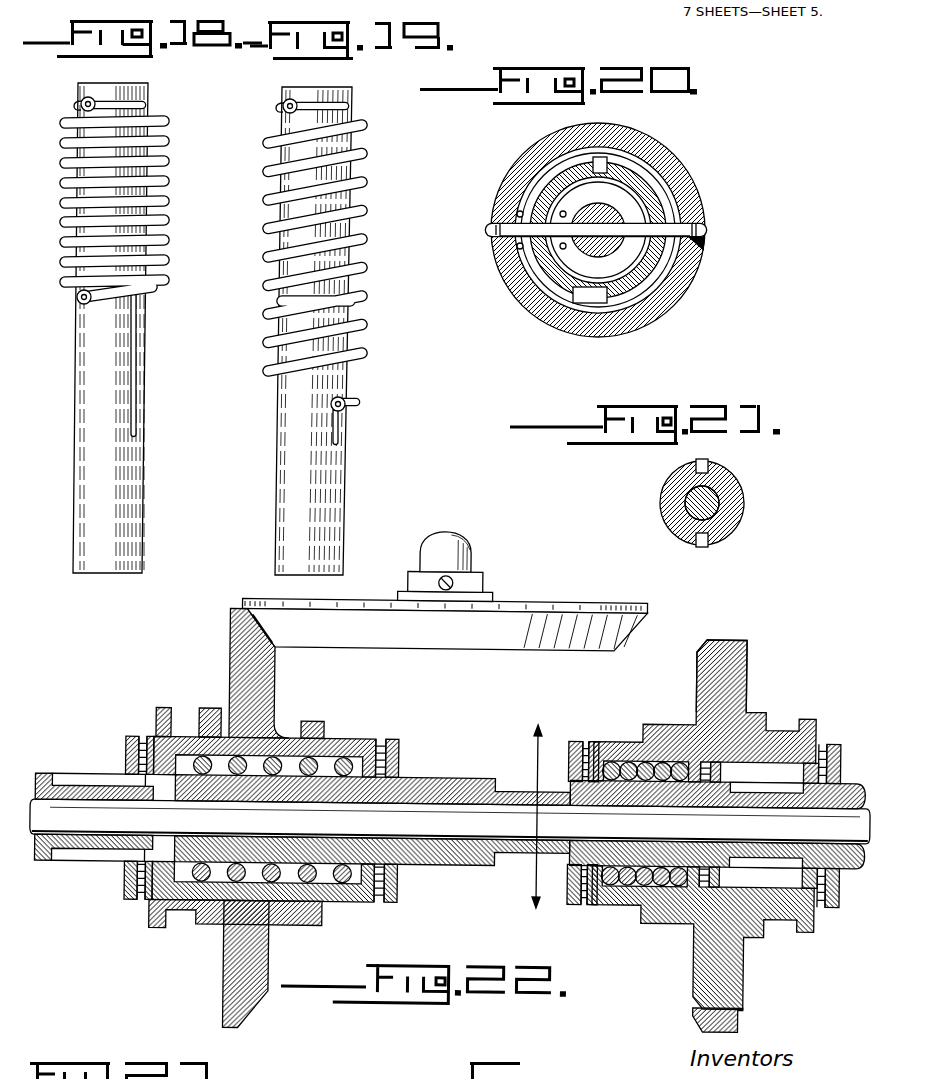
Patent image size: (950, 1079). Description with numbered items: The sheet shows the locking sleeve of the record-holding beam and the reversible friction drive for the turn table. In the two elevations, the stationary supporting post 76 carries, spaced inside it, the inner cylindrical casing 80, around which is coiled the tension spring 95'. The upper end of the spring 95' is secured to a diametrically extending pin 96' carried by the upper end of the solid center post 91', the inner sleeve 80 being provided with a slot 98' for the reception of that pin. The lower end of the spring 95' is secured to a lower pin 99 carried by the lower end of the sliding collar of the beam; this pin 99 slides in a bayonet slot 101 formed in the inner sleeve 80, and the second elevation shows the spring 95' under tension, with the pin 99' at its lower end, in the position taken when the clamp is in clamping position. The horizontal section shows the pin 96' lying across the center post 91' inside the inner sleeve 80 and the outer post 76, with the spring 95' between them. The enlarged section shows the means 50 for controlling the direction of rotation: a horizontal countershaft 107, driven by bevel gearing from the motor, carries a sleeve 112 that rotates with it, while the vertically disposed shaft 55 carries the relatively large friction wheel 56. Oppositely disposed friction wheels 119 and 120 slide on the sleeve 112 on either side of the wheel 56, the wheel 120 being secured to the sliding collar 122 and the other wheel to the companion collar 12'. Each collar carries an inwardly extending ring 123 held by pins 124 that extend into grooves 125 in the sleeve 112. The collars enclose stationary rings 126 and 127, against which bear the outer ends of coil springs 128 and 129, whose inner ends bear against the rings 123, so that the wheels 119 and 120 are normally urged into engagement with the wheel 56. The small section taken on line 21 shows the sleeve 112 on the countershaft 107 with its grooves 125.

In FIG. 22, the means for controlling the direction of rotation 50 is at (443, 797).
In FIG. 22, the vertically disposed shaft 55 is at (453, 548).
In FIG. 22, the friction wheel 56 is at (532, 625).
In FIG. 20, the supporting post 76 is at (677, 293).
In FIG. 18, the inner spaced cylindrical casing 80 is at (100, 510).
In FIG. 19, the inner spaced cylindrical casing 80 is at (315, 502).
In FIG. 20, the inner spaced cylindrical casing 80 is at (657, 267).
In FIG. 20, the solid center post 91' is at (662, 189).
In FIG. 18, the tension spring 95' is at (144, 209).
In FIG. 19, the tension spring 95' is at (348, 248).
In FIG. 20, the tension spring 95' is at (572, 230).
In FIG. 18, the diametrically extending pin 96' is at (131, 85).
In FIG. 19, the diametrically extending pin 96' is at (330, 86).
In FIG. 20, the diametrically extending pin 96' is at (634, 202).
In FIG. 18, the slot 98' is at (155, 97).
In FIG. 19, the slot 98' is at (354, 100).
In FIG. 20, the slot 98' is at (639, 235).
In FIG. 18, the lower pin 99 is at (65, 326).
In FIG. 19, the clip 99' is at (380, 386).
In FIG. 18, the bayonet slot 101 is at (134, 361).
In FIG. 21, the countershaft 107 is at (712, 500).
In FIG. 22, the countershaft 107 is at (440, 811).
In FIG. 21, the sleeve 112 is at (728, 487).
In FIG. 22, the sleeve 112 is at (402, 787).
In FIG. 22, the friction wheel 119 is at (243, 693).
In FIG. 22, the friction wheel 120 is at (723, 667).
In FIG. 22, the bearing housing 12' is at (278, 796).
In FIG. 22, the sliding collar 122 is at (600, 735).
In FIG. 22, the inwardly extending rings 123 is at (125, 768).
In FIG. 22, the inwardly extending pins 124 is at (385, 735).
In FIG. 21, the grooves 125 is at (706, 462).
In FIG. 22, the grooves 125 is at (82, 782).
In FIG. 22, the stationary ring 126 is at (583, 735).
In FIG. 22, the stationary ring 127 is at (762, 924).
In FIG. 22, the coil spring 128 is at (197, 898).
In FIG. 22, the coil spring 129 is at (613, 878).
In FIG. 22, the section line 21- 21 is at (536, 821).